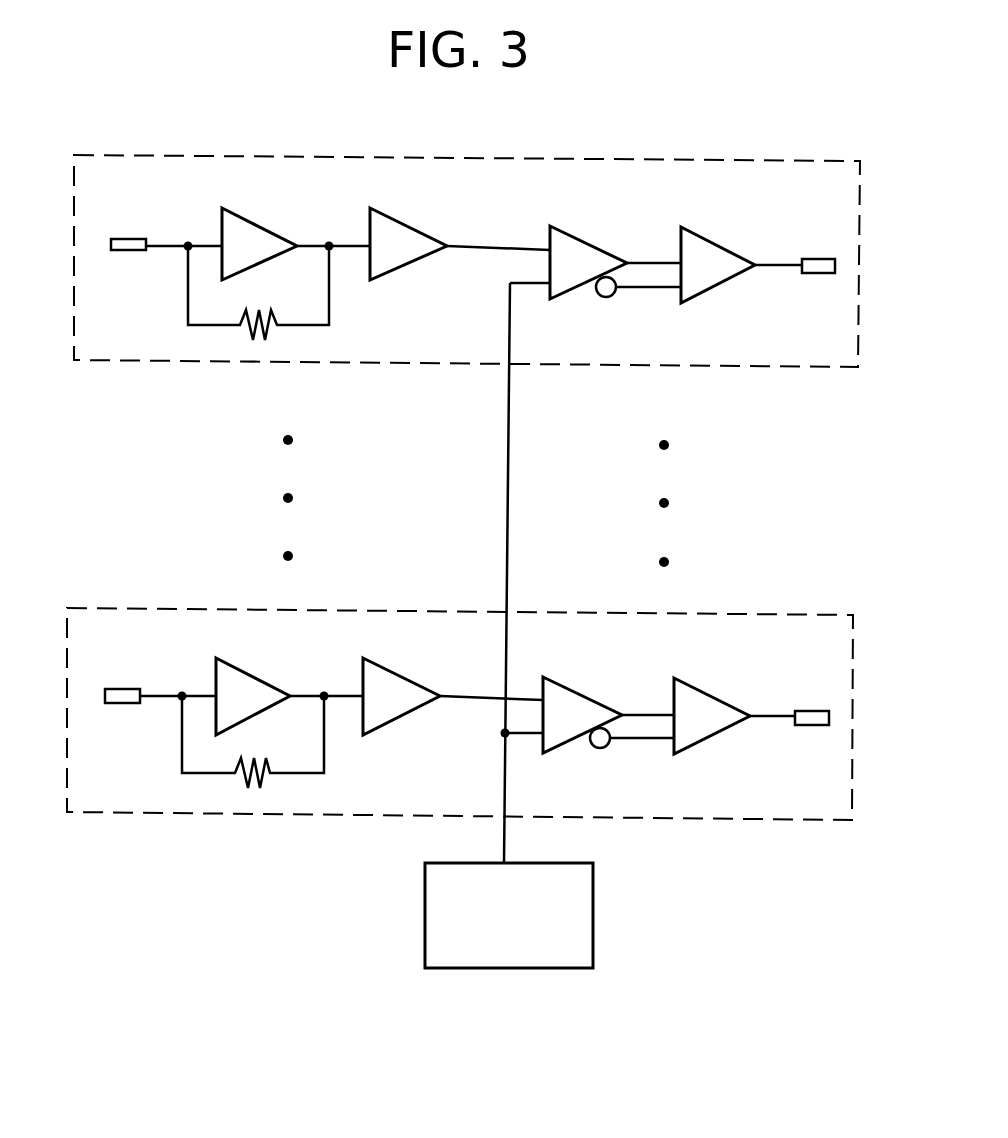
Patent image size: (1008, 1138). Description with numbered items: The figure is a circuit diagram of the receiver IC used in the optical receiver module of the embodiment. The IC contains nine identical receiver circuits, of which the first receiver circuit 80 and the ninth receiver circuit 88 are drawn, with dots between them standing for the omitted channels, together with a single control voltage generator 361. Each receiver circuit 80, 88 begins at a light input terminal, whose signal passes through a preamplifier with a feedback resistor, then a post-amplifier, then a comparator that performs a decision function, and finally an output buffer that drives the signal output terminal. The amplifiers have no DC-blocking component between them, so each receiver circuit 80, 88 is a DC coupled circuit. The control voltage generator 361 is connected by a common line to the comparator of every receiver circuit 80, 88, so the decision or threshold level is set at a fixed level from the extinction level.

The receiver circuit 80 is at (797, 370).
The receiver circuit 88 is at (803, 822).
The control voltage generator 361 is at (594, 921).